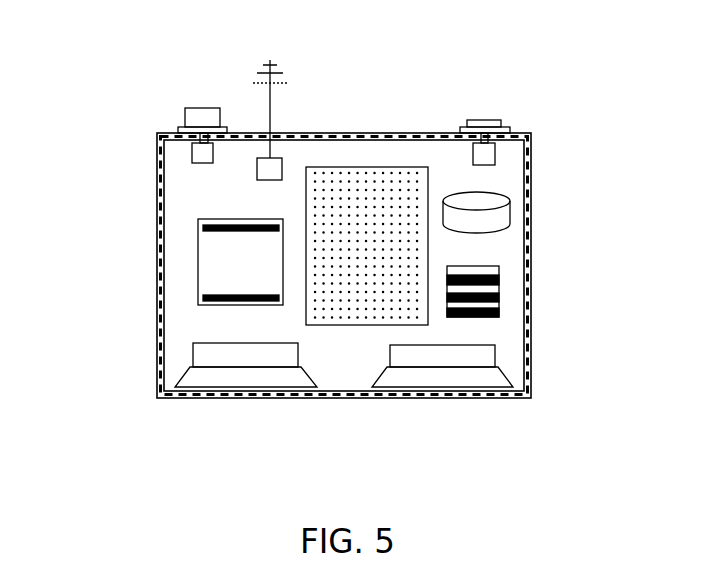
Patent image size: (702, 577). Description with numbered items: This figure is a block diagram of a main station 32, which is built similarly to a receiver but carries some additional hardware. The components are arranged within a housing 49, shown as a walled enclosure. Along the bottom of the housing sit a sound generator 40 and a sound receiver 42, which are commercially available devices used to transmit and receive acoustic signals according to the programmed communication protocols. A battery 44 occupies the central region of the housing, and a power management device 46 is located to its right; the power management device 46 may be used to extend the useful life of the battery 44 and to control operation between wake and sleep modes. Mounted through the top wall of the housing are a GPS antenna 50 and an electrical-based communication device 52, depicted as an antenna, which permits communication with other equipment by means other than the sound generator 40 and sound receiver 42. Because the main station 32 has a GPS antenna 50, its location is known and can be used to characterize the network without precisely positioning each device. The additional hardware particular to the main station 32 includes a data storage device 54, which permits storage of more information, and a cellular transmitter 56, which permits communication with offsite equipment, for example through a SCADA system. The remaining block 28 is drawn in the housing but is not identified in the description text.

The main station 32 is at (341, 212).
The housing 49 is at (157, 203).
The cellular transmitter 56 is at (202, 117).
The electrical-based communication device 52 is at (267, 95).
The battery 44 is at (351, 202).
The GPS antenna 50 is at (484, 120).
The data storage device 54 is at (485, 221).
The power management device 46 is at (470, 286).
The controller 28 is at (213, 253).
The sound generator 40 is at (213, 375).
The sound receiver 42 is at (437, 368).